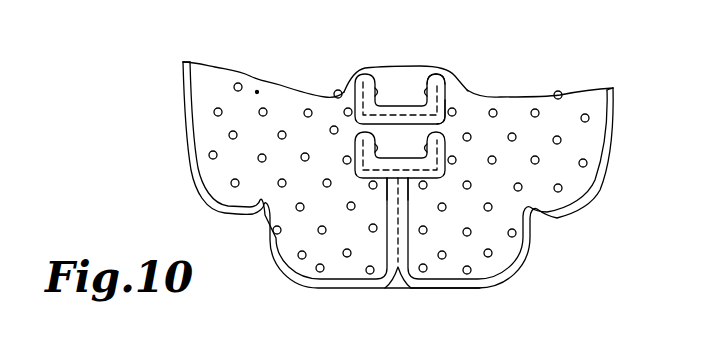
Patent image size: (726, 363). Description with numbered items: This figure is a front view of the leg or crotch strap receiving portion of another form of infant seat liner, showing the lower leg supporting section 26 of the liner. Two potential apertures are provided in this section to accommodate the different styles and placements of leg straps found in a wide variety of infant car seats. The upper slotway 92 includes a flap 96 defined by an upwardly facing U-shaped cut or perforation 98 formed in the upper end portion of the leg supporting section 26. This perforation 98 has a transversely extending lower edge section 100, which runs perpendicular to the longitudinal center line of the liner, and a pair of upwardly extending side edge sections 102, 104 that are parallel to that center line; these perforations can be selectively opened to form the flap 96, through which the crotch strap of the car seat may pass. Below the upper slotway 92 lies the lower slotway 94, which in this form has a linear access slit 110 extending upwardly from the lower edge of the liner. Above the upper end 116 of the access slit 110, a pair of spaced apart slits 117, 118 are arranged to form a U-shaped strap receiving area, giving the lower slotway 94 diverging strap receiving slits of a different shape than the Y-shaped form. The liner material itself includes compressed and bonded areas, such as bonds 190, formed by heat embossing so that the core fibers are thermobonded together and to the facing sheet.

The lower leg supporting section 26 is at (201, 95).
The upper slotway 92 is at (353, 114).
The lower slotway 94 is at (370, 203).
The flap 96 is at (417, 83).
The U-shaped cut or perforation 98 is at (447, 73).
The lower edge section 100 is at (390, 113).
The side edge section 102 is at (356, 92).
The side edge section 104 is at (450, 90).
The access slit 110 is at (396, 220).
The upper end of access slit 116 is at (385, 188).
The strap receiving slit 117 is at (362, 143).
The strap receiving slit 118 is at (452, 152).
The bonds 190 is at (453, 132).